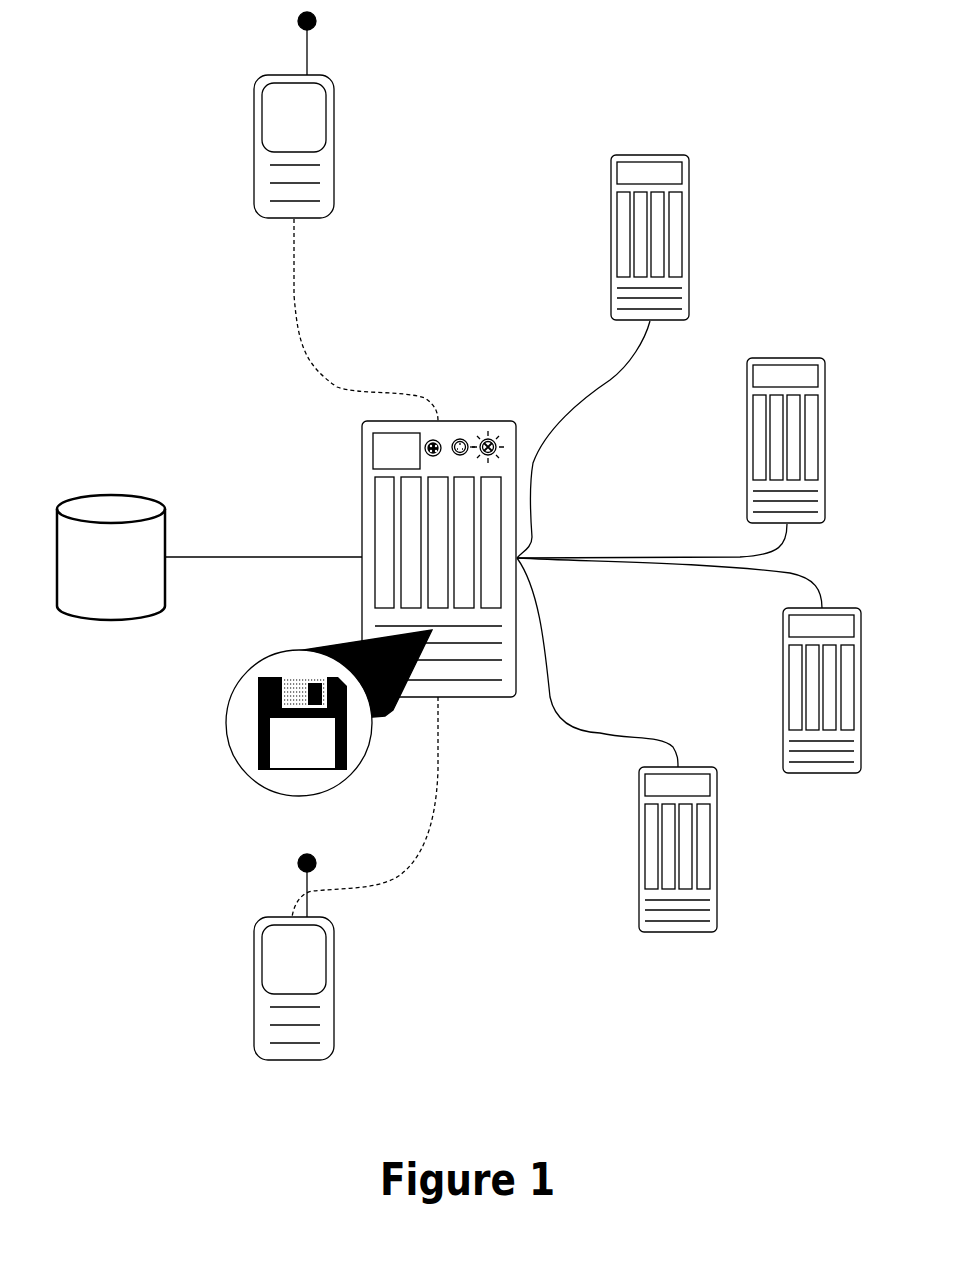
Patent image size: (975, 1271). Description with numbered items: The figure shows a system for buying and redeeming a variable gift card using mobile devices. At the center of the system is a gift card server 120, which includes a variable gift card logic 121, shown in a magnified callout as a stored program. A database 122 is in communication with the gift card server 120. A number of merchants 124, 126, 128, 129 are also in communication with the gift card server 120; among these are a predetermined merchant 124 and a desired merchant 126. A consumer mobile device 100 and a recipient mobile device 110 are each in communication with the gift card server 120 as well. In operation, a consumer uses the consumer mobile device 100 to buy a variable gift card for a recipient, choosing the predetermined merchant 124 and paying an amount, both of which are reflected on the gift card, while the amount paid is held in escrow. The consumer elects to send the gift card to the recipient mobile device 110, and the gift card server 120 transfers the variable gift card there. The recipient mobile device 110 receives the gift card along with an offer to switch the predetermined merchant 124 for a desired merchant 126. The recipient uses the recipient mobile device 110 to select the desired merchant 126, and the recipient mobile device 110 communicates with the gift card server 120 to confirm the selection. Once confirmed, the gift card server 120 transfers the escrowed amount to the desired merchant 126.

The consumer mobile device 100 is at (334, 145).
The recipient mobile device 110 is at (334, 985).
The gift card server 120 is at (450, 421).
The variable gift card logic 121 is at (258, 730).
The database 122 is at (112, 492).
The predetermined merchant 124 is at (690, 235).
The desired merchant 126 is at (747, 488).
The merchant 128 is at (783, 688).
The merchant 129 is at (640, 848).